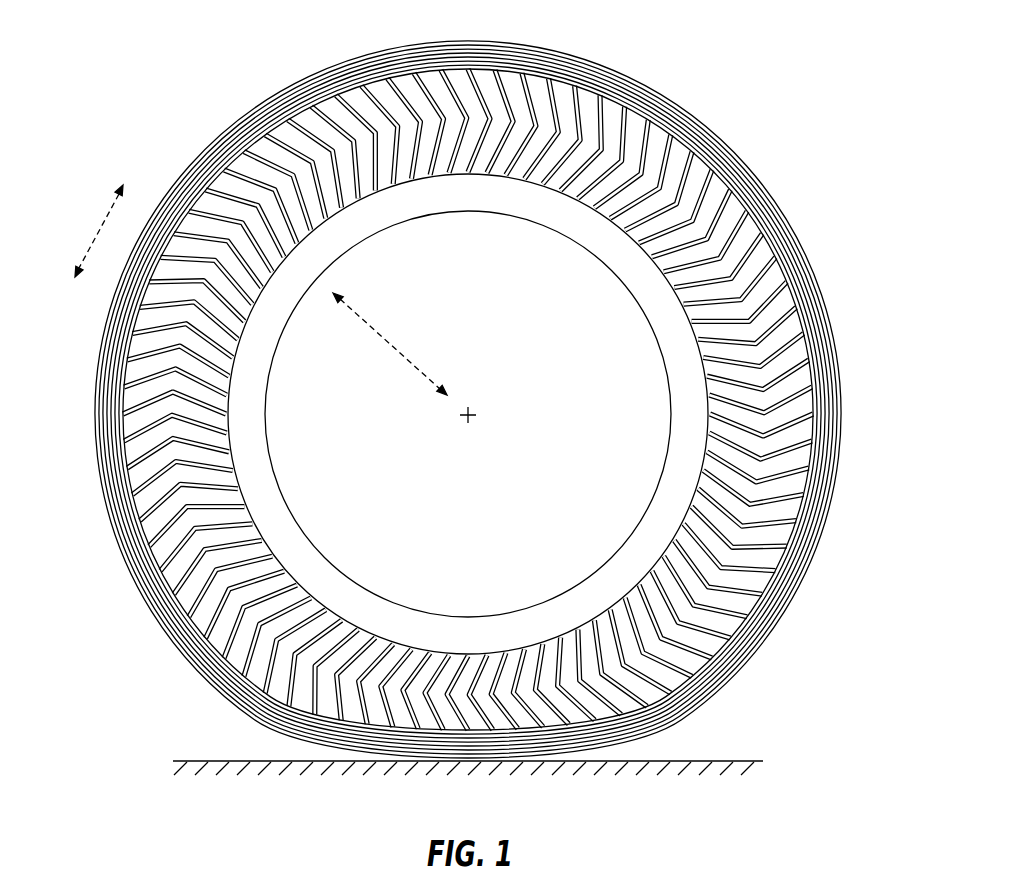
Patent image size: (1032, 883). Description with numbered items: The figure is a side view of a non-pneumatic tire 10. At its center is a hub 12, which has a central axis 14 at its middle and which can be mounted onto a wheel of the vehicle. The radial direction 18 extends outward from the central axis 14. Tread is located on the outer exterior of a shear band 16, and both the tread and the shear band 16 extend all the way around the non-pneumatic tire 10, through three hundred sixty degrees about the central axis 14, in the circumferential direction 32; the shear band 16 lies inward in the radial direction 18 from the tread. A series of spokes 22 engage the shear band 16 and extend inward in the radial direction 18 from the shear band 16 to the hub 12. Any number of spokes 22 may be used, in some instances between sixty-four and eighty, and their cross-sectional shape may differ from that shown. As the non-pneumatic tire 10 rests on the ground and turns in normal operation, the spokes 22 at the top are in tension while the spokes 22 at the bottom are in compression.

The non-pneumatic tire 10 is at (503, 390).
The hub 12 is at (268, 497).
The central axis 14 is at (466, 421).
The shear band 16 is at (760, 635).
The radial direction 18 is at (388, 342).
The spokes 22 is at (788, 358).
The circumferential direction 32 is at (98, 227).